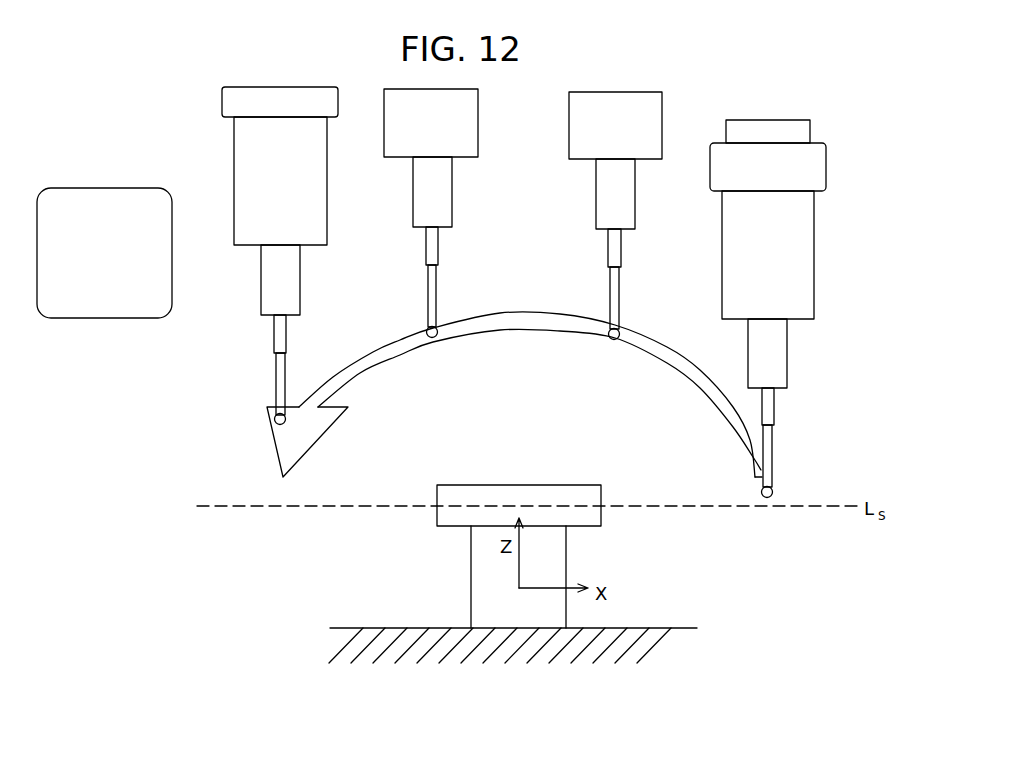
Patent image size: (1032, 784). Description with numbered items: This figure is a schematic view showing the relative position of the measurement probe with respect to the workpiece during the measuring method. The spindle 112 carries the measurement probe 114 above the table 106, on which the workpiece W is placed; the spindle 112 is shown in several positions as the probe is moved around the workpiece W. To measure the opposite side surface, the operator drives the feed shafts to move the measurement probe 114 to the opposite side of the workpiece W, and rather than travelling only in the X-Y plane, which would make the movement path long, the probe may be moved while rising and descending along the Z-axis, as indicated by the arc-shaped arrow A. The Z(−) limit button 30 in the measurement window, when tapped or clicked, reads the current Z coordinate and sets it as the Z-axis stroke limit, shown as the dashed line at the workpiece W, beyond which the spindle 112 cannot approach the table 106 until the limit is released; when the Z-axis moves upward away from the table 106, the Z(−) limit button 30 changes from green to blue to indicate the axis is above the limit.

The Z(−) limit button 30 is at (124, 188).
The spindle 112 is at (815, 243).
The measurement probe 114 is at (788, 357).
The table 106 is at (662, 628).
The workpiece W is at (478, 485).
The arc-shaped arrow A is at (516, 320).